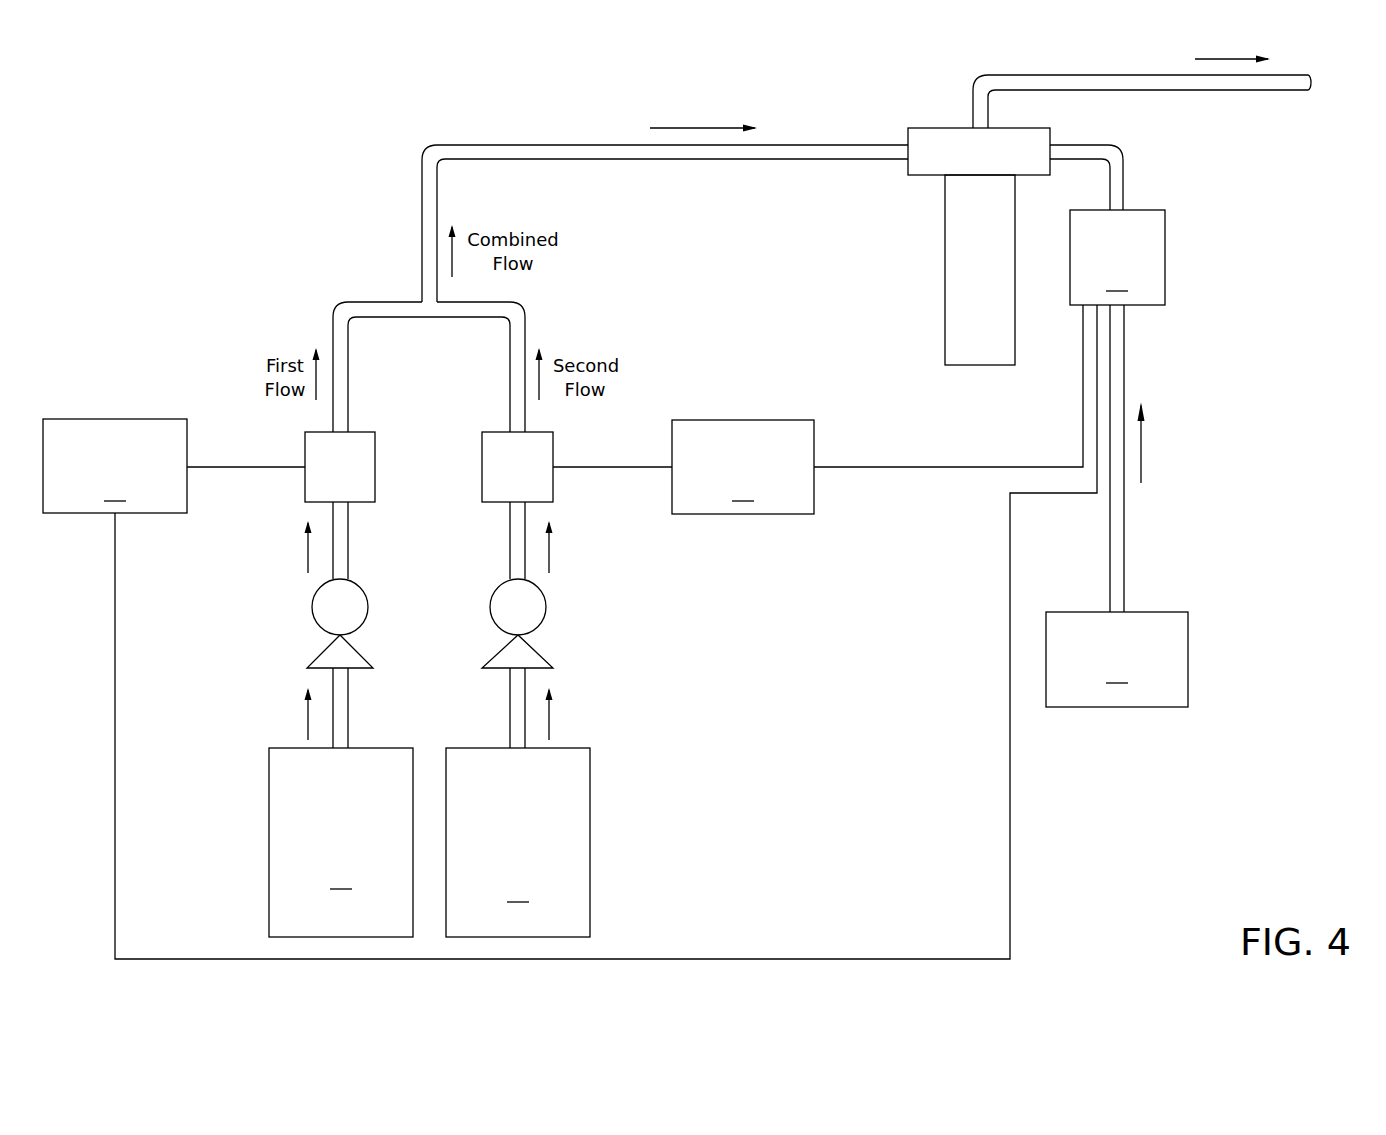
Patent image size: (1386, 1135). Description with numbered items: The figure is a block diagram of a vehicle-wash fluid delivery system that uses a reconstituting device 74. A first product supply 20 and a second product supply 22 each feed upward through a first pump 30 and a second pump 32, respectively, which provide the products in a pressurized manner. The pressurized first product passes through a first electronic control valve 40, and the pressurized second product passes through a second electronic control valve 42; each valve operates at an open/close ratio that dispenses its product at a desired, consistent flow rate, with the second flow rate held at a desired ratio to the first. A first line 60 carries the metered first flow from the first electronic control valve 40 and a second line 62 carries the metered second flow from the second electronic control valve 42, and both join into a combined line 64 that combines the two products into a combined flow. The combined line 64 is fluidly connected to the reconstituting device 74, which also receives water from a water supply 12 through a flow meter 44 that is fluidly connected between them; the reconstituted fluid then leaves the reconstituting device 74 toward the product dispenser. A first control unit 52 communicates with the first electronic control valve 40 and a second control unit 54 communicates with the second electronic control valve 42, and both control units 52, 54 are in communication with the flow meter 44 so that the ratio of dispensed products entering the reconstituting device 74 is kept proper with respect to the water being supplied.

The water supply 12 is at (1117, 659).
The first product supply 20 is at (341, 842).
The second product supply 22 is at (518, 842).
The first pump 30 is at (308, 610).
The second pump 32 is at (546, 607).
The first electronic control valve 40 is at (376, 470).
The second electronic control valve 42 is at (482, 467).
The flow meter 44 is at (640, 584).
The first control unit 52 is at (174, 466).
The second control unit 54 is at (683, 467).
The first line 60 is at (333, 413).
The second line 62 is at (525, 415).
The combined line 64 is at (430, 236).
The reconstituting device 74 is at (947, 138).